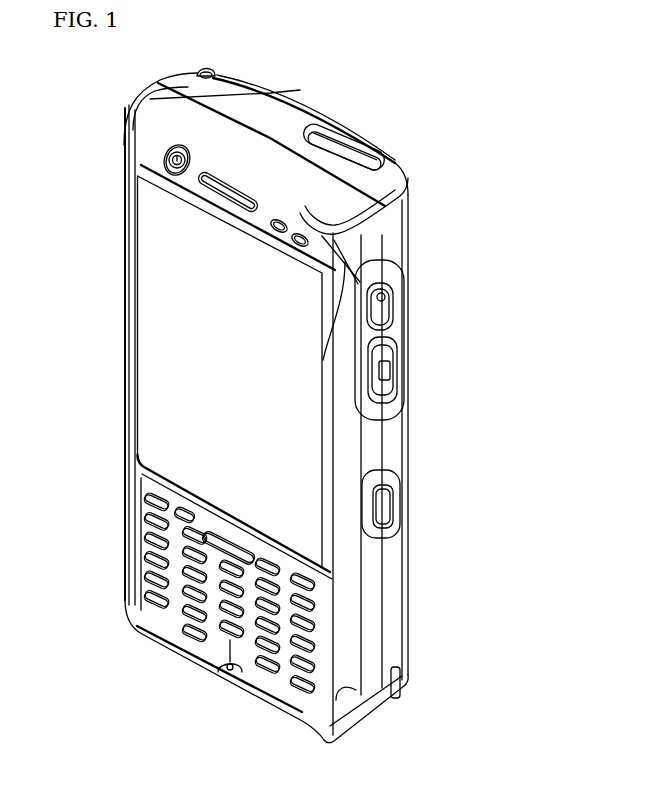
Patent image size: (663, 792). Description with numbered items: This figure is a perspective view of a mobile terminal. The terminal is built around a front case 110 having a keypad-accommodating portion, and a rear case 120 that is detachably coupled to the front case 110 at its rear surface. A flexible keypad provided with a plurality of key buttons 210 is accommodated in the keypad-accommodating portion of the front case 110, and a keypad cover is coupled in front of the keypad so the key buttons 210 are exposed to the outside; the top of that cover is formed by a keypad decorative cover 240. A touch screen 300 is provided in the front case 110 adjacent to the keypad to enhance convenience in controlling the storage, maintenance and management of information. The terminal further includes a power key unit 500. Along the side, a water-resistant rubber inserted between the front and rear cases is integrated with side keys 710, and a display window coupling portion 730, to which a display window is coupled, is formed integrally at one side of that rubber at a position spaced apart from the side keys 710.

The front case 110 is at (235, 122).
The rear case 120 is at (300, 120).
The power key unit 500 is at (153, 158).
The touch screen 300 is at (136, 333).
The keypad decorative cover 240 is at (140, 487).
The key buttons 210 is at (150, 544).
The side keys 710 is at (397, 382).
The display window coupling portion 730 is at (390, 508).